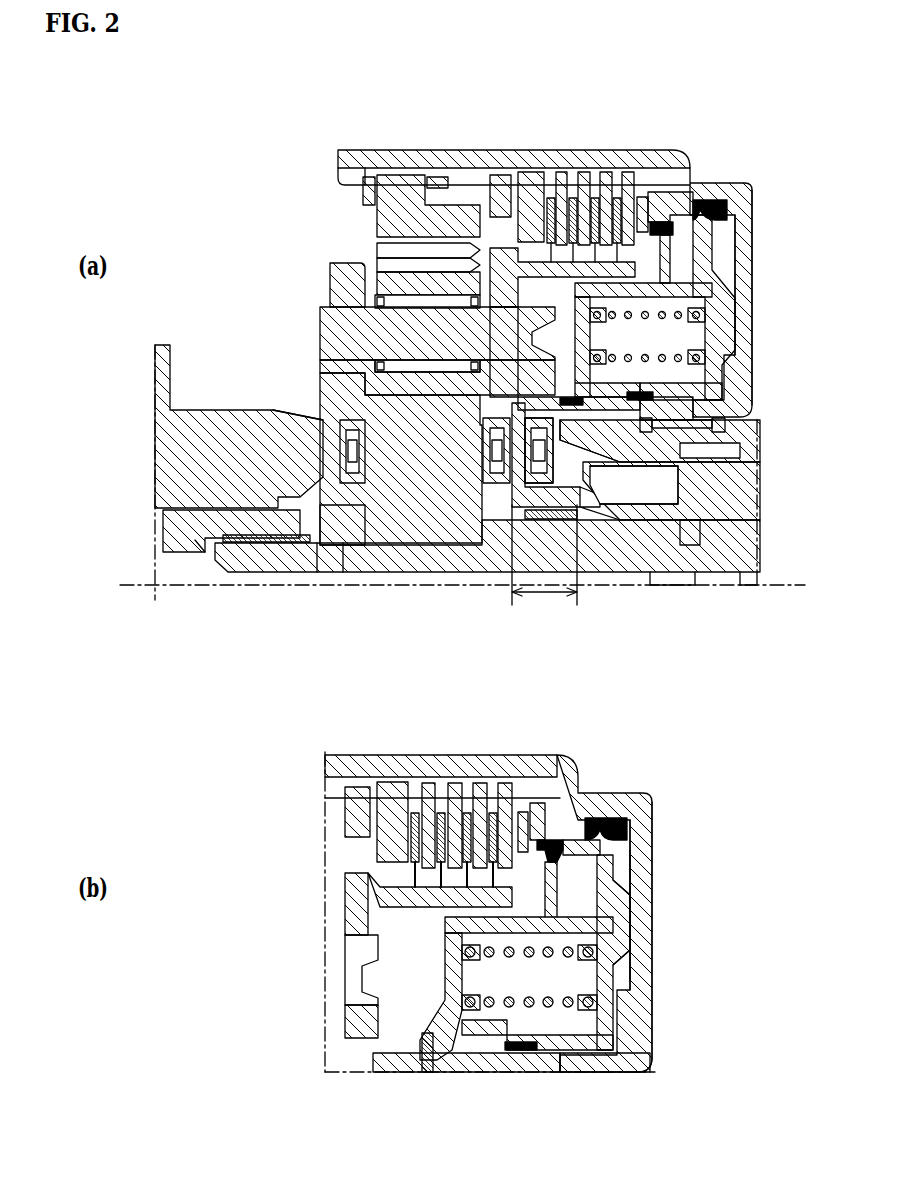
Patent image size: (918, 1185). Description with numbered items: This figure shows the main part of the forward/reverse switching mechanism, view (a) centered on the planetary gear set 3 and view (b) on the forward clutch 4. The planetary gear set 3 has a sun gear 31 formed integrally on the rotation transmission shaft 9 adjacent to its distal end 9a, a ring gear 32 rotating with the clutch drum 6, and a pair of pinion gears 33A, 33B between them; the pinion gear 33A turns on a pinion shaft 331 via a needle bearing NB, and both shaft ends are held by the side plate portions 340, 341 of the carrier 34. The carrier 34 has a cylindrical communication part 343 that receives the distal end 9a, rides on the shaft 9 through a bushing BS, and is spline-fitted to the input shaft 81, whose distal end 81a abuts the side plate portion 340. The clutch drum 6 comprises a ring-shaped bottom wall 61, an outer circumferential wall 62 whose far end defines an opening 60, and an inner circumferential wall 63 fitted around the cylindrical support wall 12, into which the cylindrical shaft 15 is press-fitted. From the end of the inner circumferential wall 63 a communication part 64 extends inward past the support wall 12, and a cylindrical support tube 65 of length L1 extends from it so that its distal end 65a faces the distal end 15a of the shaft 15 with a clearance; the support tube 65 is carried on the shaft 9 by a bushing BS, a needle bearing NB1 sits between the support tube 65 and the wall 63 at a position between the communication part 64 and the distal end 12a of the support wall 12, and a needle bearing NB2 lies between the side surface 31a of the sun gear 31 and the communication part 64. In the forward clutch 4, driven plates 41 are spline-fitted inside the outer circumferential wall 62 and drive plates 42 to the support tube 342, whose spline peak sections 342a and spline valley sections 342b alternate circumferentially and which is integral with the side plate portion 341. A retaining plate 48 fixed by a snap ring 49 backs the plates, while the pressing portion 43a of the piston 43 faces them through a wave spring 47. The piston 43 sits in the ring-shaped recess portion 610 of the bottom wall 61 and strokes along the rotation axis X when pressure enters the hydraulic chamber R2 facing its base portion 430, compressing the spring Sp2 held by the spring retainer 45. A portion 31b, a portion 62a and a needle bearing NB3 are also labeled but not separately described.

The planetary gear set 3 is at (372, 363).
The forward clutch 4 is at (538, 561).
The clutch drum 6 is at (688, 623).
The rotation transmission shaft 9 is at (489, 571).
The distal end of the rotation transmission shaft 9a is at (215, 553).
The cylindrical support wall 12 is at (682, 443).
The distal end of the support wall 12a is at (558, 452).
The cylindrical shaft 15 is at (695, 491).
The distal end of the cylindrical shaft 15a is at (612, 480).
The sun gear 31 is at (391, 429).
The side surface of the sun gear 31a is at (440, 512).
The shaft hub portion 31b is at (357, 507).
The ring gear 32 is at (375, 232).
The pinion gear 33A is at (375, 285).
The pinion gear 33B is at (375, 256).
The carrier 34 is at (330, 304).
The driven plates 41 is at (442, 810).
The drive plates 42 is at (482, 790).
The piston 43 is at (590, 621).
The pressing portion of the piston 43a is at (525, 812).
The spring retainer 45 is at (458, 978).
The wave spring 47 is at (496, 815).
The retaining plate 48 is at (392, 795).
The snap ring 49 is at (357, 792).
The opening 60 is at (356, 218).
The bottom wall 61 is at (752, 230).
The outer circumferential wall 62 is at (540, 165).
The cover lip 62a is at (340, 158).
The inner circumferential wall 63 is at (705, 412).
The communication part 64 is at (522, 445).
The cylindrical support tube 65 is at (512, 492).
The distal end of the support tube 65a is at (582, 493).
The input shaft 81 is at (205, 426).
The distal end of the input shaft 81a is at (300, 417).
The pinion shaft 331 is at (350, 320).
The side plate portion 340 is at (345, 380).
The side plate portion 341 is at (518, 366).
The cylindrical support tube 342 is at (400, 591).
The spline peak sections 342a is at (400, 892).
The spline valley sections 342b is at (380, 917).
The cylindrical communication part 343 is at (247, 522).
The ring-shaped base portion of the piston 430 is at (632, 890).
The ring-shaped recess portion 610 is at (632, 860).
The needle bearing NB is at (430, 368).
The needle bearing NB1 is at (540, 418).
The needle bearing NB2 is at (490, 458).
The needle bearing NB3 is at (410, 470).
The bushing BS is at (265, 542).
The spring Sp2 is at (534, 955).
The predetermined length L1 is at (544, 565).
The hydraulic chamber R2 is at (642, 1067).
The rotation axis X is at (475, 708).